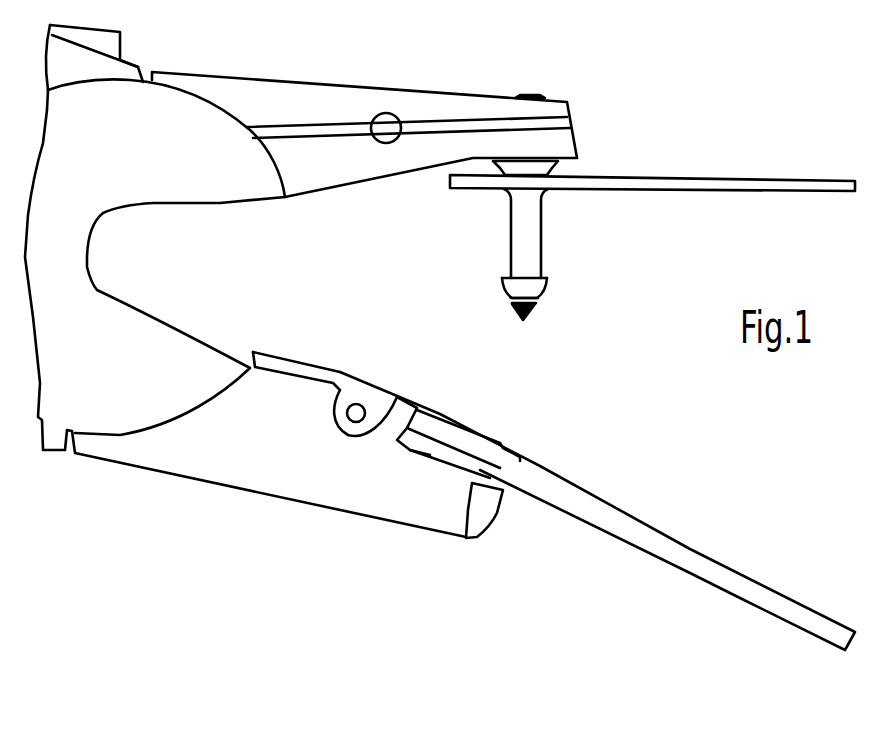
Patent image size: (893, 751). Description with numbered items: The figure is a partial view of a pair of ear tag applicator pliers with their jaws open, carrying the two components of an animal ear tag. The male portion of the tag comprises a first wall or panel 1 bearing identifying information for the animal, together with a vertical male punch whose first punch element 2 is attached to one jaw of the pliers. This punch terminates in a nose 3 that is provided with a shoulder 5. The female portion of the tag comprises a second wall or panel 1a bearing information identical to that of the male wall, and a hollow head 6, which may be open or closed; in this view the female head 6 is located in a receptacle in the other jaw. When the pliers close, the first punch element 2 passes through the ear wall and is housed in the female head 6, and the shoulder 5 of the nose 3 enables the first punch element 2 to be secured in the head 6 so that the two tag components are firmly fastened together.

The first wall or panel 1 is at (683, 188).
The second wall or panel 1a is at (693, 557).
The first punch element 2 is at (527, 252).
The nose 3 is at (502, 292).
The shoulder 5 is at (507, 275).
The hollow head 6 is at (462, 542).